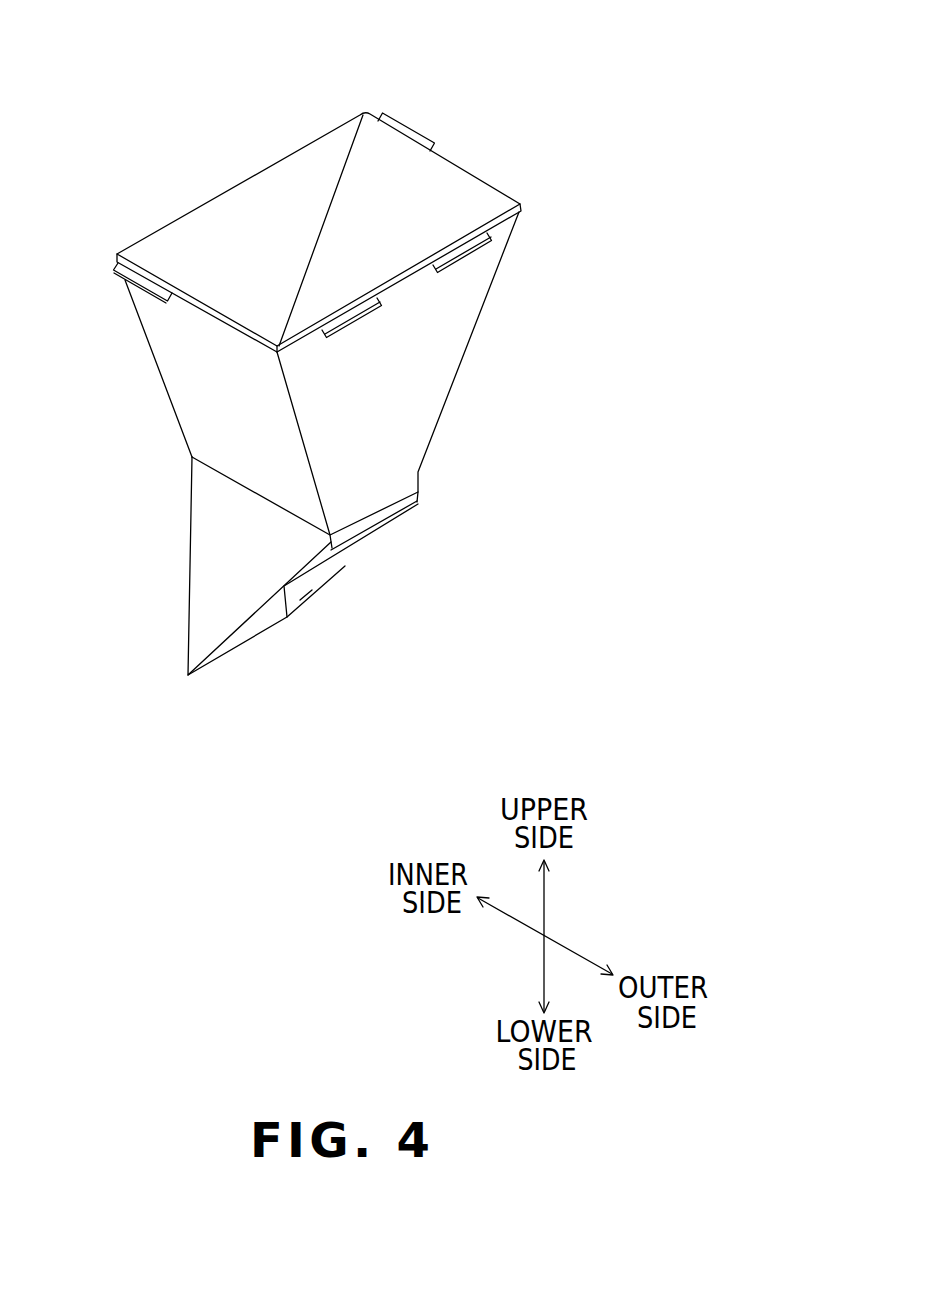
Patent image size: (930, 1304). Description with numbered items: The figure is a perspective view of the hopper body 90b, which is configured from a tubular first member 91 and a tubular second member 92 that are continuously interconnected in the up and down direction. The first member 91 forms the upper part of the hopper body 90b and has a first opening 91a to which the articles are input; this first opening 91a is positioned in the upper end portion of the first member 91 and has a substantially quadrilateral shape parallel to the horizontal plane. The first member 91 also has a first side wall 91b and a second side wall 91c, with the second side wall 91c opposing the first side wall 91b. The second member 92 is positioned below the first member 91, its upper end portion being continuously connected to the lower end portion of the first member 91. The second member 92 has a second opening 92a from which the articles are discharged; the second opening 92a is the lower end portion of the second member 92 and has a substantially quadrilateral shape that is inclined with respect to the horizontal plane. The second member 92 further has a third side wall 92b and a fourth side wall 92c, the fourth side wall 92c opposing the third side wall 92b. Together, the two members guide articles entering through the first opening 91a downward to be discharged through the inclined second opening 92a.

The hopper body 90b is at (130, 113).
The first member 91 is at (543, 104).
The first opening 91a is at (279, 196).
The first side wall 91b is at (175, 358).
The second side wall 91c is at (368, 198).
The second member 92 is at (543, 476).
The second opening 92a is at (305, 596).
The third side wall 92b is at (212, 542).
The fourth side wall 92c is at (332, 563).